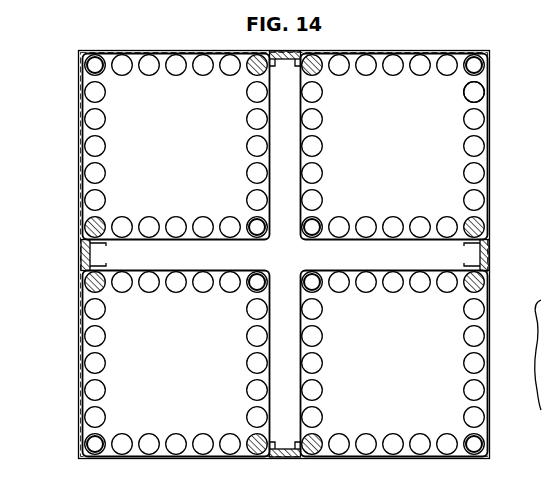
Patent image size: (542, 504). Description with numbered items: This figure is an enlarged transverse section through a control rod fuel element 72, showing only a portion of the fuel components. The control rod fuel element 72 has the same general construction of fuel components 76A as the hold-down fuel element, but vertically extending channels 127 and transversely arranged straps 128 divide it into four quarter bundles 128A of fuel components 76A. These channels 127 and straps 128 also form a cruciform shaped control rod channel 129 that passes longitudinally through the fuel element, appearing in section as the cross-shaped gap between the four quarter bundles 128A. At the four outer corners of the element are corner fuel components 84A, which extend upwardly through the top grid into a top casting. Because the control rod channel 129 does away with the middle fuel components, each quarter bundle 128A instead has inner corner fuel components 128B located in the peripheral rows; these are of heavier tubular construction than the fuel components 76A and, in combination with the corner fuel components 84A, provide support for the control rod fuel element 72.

The control rod fuel element 72 is at (280, 257).
The fuel component 76A is at (472, 94).
The corner fuel component 84A is at (89, 64).
The vertically extending channel 127 is at (287, 52).
The transversely arranged strap 128 is at (80, 125).
The quarter bundle 128A is at (368, 90).
The inner corner fuel component 128B is at (252, 76).
The control rod channel 129 is at (300, 261).